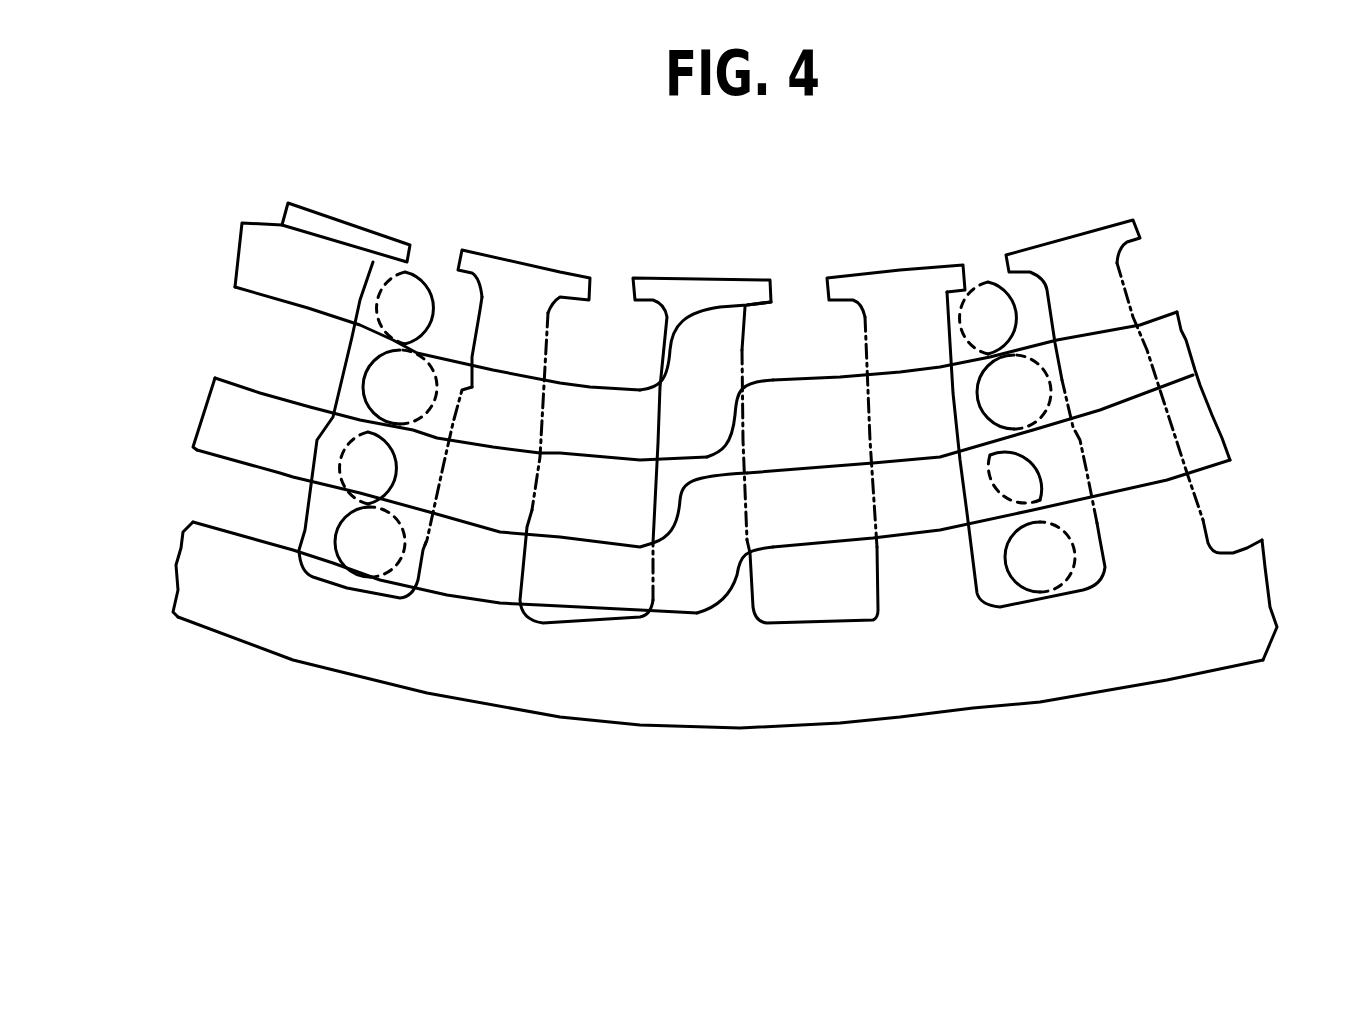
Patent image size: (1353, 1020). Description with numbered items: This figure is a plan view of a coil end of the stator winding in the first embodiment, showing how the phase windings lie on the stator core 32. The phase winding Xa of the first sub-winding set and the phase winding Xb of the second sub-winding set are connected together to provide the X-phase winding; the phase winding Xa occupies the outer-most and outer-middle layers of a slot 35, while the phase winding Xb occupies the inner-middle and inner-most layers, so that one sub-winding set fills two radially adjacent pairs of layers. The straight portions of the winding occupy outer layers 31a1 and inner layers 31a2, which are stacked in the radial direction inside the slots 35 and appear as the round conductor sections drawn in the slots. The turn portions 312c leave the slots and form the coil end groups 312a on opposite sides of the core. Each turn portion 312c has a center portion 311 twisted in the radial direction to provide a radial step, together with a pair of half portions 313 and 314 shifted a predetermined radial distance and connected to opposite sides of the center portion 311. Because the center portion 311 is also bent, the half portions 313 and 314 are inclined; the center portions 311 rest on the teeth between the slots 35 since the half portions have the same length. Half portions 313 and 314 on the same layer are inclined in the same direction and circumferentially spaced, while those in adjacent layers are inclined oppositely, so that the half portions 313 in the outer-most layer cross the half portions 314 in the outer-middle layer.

The outer layers 31a1 is at (353, 548).
The inner layers 31a2 is at (1022, 473).
The center portion 311 is at (707, 540).
The coil end group 312a is at (477, 603).
The turn portion 312c is at (700, 370).
The half portion 313 is at (575, 585).
The half portion 314 is at (842, 512).
The stator core 32 is at (975, 678).
The slot 35 is at (603, 343).
The phase winding in first sub-winding set Xa is at (1235, 378).
The phase winding in second sub-winding set Xb is at (1180, 233).